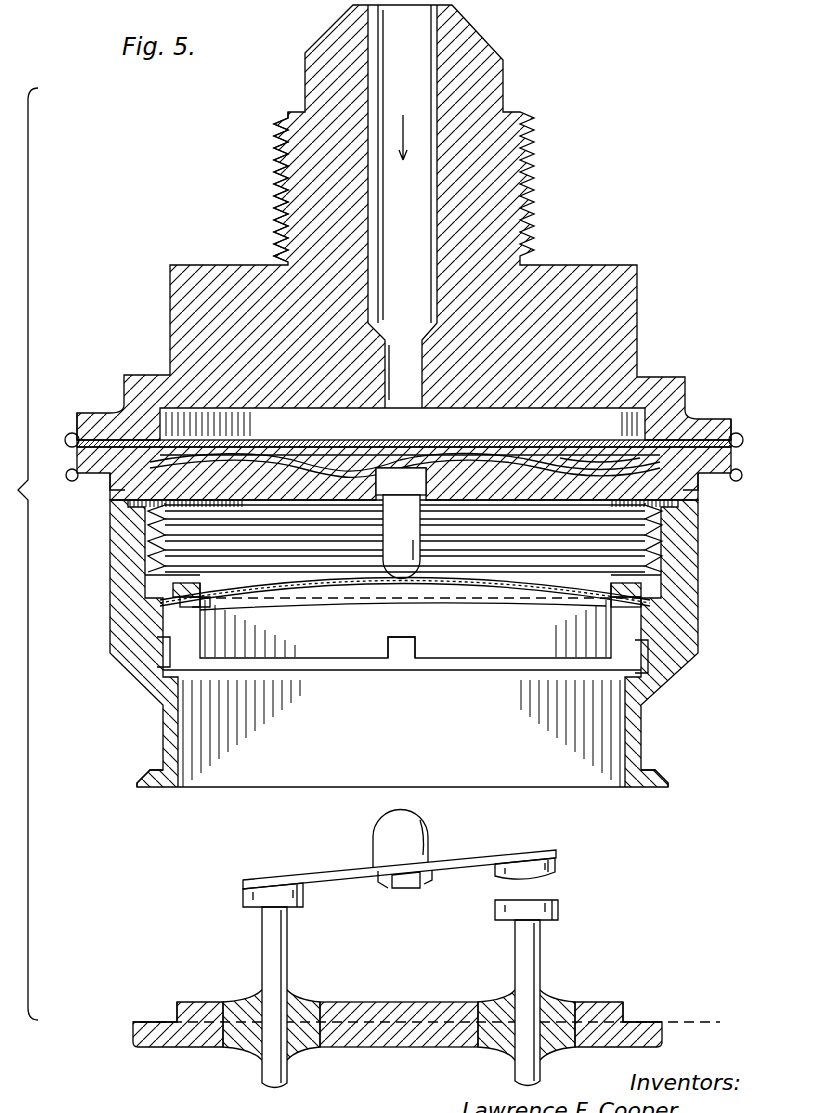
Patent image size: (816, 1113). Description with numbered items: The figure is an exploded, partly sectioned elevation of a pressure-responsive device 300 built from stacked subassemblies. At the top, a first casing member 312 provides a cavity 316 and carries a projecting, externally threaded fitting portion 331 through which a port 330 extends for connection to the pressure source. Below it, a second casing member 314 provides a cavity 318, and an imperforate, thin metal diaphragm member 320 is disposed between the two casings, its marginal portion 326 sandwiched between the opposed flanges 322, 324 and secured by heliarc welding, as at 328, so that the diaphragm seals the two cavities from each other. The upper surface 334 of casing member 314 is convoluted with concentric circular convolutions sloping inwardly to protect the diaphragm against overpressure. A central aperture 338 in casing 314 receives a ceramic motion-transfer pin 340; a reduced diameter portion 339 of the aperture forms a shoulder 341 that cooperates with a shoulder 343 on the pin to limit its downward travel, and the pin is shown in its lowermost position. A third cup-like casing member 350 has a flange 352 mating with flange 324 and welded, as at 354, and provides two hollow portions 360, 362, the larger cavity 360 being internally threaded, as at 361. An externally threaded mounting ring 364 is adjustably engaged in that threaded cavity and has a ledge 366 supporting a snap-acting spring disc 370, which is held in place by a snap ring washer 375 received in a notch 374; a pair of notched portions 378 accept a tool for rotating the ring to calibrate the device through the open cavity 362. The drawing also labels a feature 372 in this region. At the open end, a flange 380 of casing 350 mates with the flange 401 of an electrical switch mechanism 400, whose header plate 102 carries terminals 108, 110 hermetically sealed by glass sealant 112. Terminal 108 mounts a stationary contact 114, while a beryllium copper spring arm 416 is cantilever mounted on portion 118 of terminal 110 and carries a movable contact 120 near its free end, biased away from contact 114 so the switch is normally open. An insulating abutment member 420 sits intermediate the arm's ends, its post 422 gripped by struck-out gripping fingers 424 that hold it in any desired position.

The pressure-responsive device 300 is at (214, 204).
The first casing member 312 is at (195, 315).
The port 330 is at (379, 58).
The fitting portion 331 is at (285, 138).
The flange 322 is at (78, 415).
The marginal portion 326 is at (102, 439).
The heliarc weld 328 is at (67, 440).
The flange 324 is at (78, 467).
The heliarc weld 354 is at (70, 479).
The flange 352 is at (96, 493).
The second casing member 314 is at (153, 488).
The convoluted surface 334 is at (322, 468).
The aperture 338 is at (397, 462).
The diaphragm member 320 is at (450, 455).
The shoulder 343 is at (458, 470).
The cavity 316 is at (545, 436).
The cavity 318 is at (612, 462).
The motion-transfer pin 340 is at (401, 481).
The shoulder 341 is at (401, 537).
The reduced diameter portion 339 is at (401, 543).
The third casing member 350 is at (690, 549).
The internal threads 361 is at (696, 536).
The cylindrical hollow portion 360 is at (656, 566).
The cylindrical hollow portion 362 is at (140, 573).
The retaining ring 372 is at (170, 595).
The notch 374 is at (162, 612).
The ledge 366 is at (215, 605).
The snap-acting spring disc 370 is at (373, 588).
The snap ring washer 375 is at (592, 609).
The mounting ring 364 is at (507, 652).
The notched portions 378 is at (416, 645).
The flange 380 is at (146, 764).
The electrical switch mechanism 400 is at (193, 1096).
The header plate 102 is at (409, 1050).
The flange 401 is at (158, 1030).
The glass sealant 112 is at (296, 1002).
The terminal 110 is at (268, 949).
The terminal 108 is at (528, 953).
The portion of terminal 118 is at (245, 893).
The stationary contact 114 is at (560, 911).
The spring arm 416 is at (463, 862).
The movable contact 120 is at (560, 860).
The abutment member 420 is at (382, 832).
The post 422 is at (436, 896).
The gripping fingers 424 is at (378, 888).